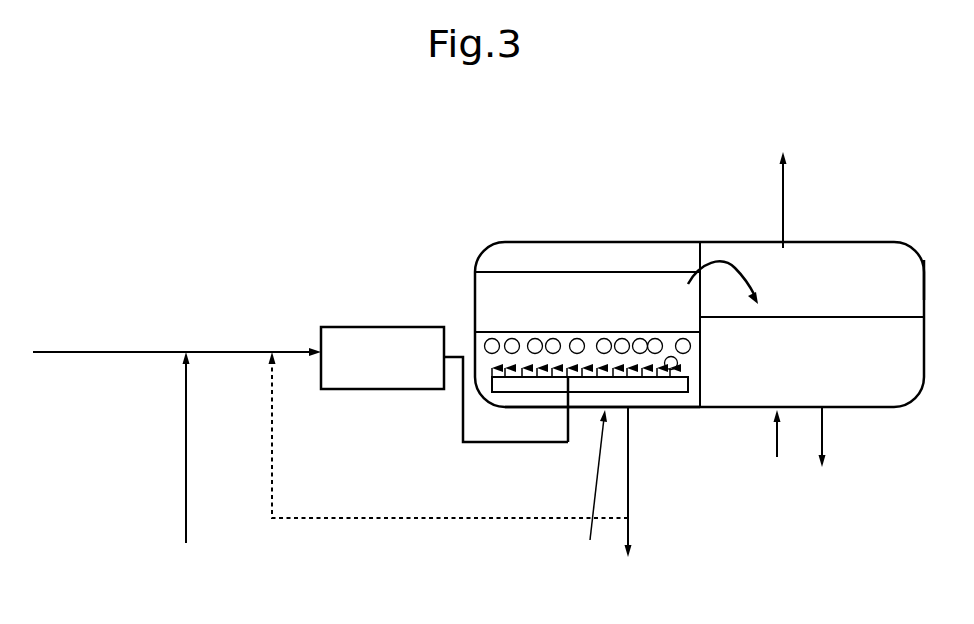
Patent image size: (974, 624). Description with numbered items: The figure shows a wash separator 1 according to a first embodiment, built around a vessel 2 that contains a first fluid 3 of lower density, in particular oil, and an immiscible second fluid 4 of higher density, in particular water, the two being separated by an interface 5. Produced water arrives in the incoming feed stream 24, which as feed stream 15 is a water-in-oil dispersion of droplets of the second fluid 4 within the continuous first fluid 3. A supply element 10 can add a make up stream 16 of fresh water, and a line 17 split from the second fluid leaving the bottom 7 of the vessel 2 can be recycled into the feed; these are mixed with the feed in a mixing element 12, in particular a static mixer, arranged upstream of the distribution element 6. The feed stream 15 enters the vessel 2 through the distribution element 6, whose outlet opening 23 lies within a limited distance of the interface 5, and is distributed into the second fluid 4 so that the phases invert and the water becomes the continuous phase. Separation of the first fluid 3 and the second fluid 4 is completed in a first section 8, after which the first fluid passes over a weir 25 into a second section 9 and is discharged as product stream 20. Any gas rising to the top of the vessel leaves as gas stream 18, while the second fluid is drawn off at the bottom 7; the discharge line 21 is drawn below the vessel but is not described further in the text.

The wash separator 1 is at (852, 238).
The vessel 2 is at (924, 272).
The first fluid 3 is at (640, 337).
The second fluid 4 is at (588, 338).
The interface 5 is at (535, 336).
The distribution element 6 is at (535, 383).
The bottom 7 is at (518, 408).
The first section 8 is at (595, 492).
The second section 9 is at (777, 447).
The supply element 10 is at (186, 352).
The mixing element 12 is at (365, 327).
The feed stream 15 is at (463, 423).
The make up stream 16 is at (186, 507).
The line 17 is at (407, 518).
The gas stream 18 is at (785, 205).
The product stream 20 is at (823, 438).
The discharge line 21 is at (628, 468).
The outlet opening 23 is at (568, 385).
The feed stream 24 is at (108, 352).
The weir 25 is at (689, 283).